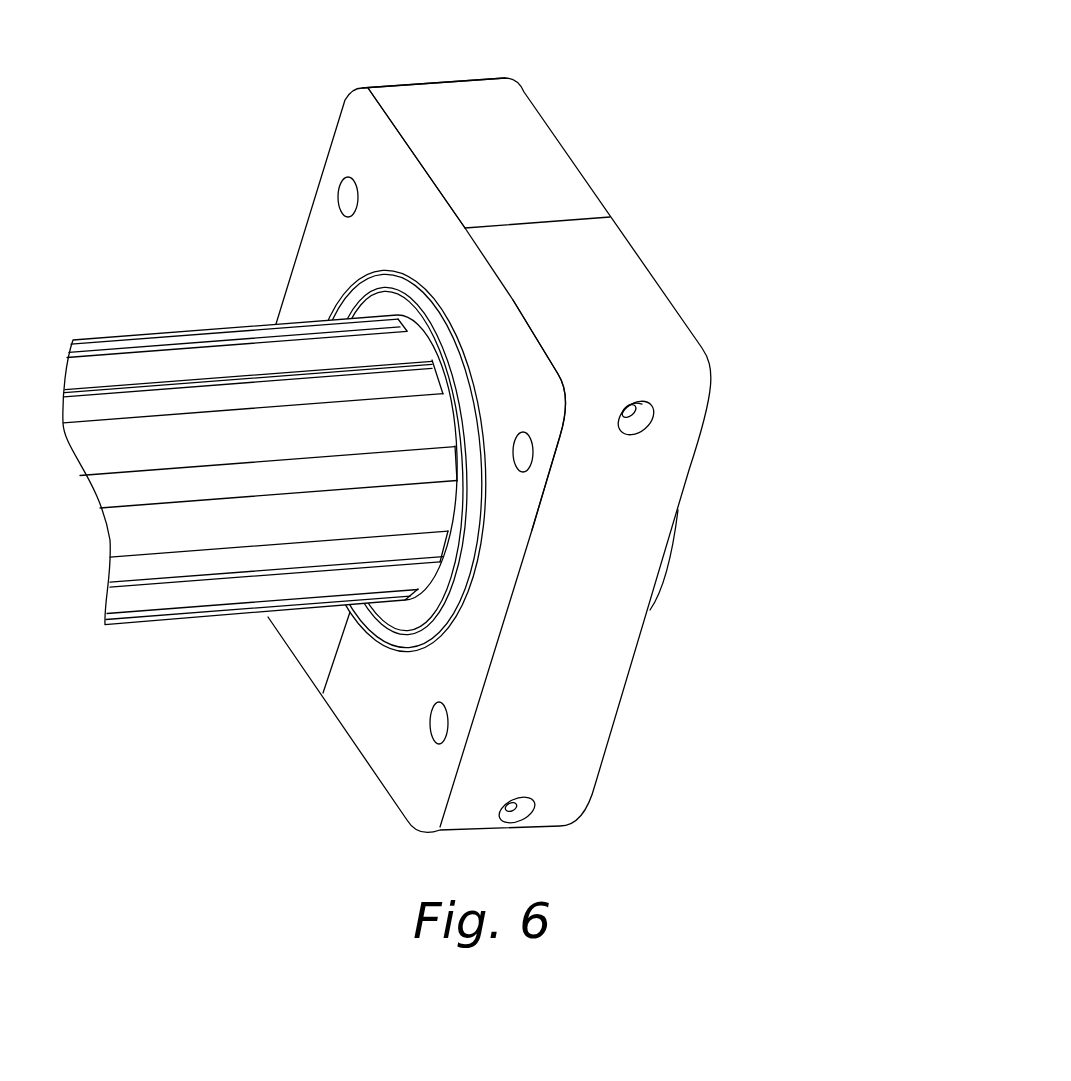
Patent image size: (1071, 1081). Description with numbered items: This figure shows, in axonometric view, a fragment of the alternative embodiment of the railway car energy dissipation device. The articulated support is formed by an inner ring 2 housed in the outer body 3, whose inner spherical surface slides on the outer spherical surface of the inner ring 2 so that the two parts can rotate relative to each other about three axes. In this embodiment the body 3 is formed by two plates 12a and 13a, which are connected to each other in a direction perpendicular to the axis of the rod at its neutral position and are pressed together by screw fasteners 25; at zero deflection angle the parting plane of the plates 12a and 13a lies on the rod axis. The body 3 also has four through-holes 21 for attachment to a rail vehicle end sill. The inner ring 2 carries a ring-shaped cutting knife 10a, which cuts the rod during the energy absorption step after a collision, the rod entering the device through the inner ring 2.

The inner ring 2 is at (422, 642).
The outer body 3 is at (692, 112).
The cutting knife 10a is at (409, 616).
The plate 12a is at (507, 157).
The plate 13a is at (612, 301).
The through-hole 21 is at (440, 735).
The screw fastener 25 is at (636, 418).